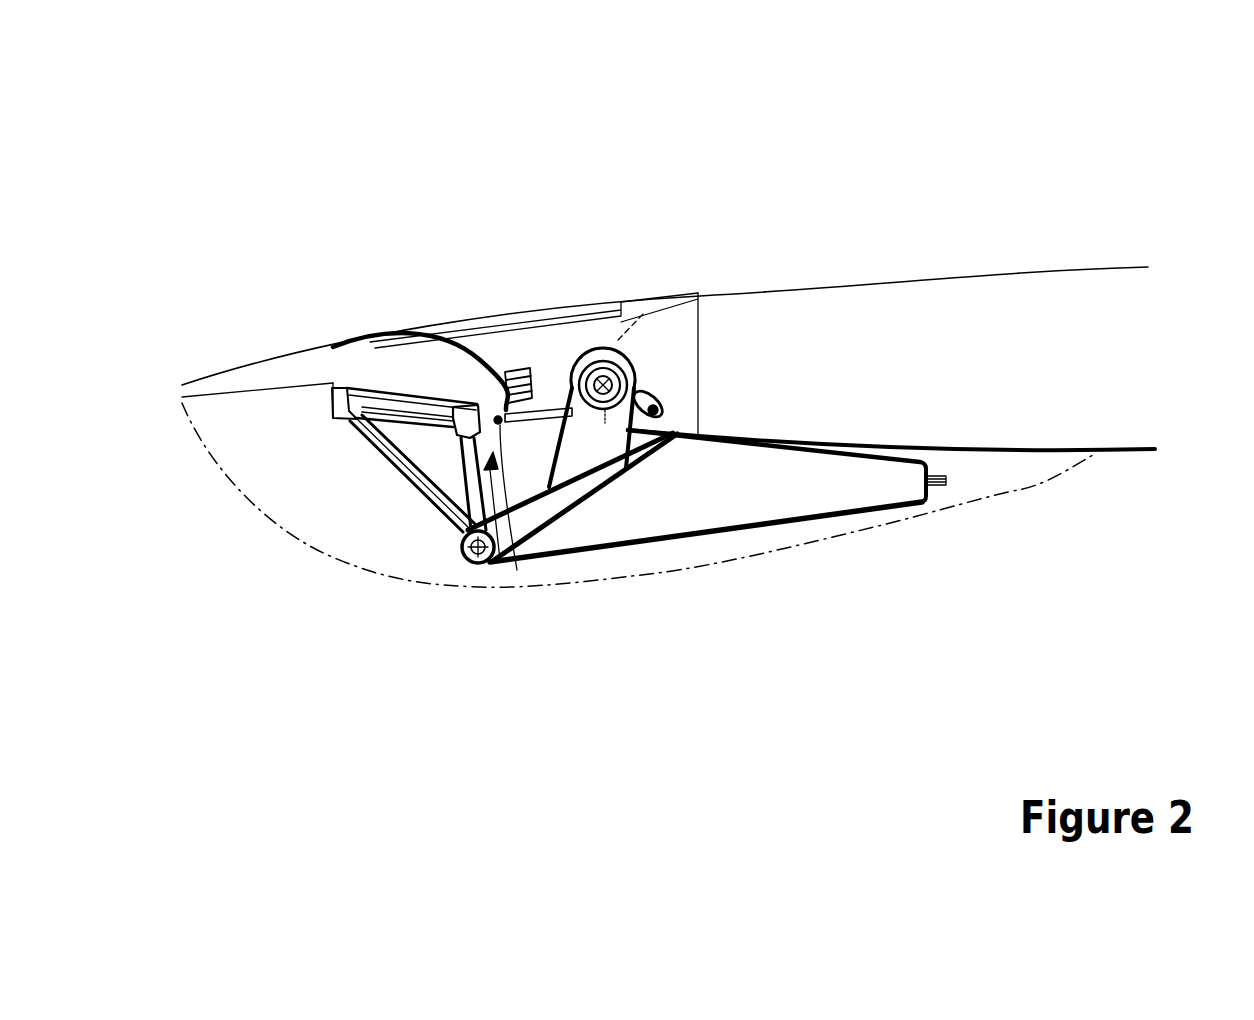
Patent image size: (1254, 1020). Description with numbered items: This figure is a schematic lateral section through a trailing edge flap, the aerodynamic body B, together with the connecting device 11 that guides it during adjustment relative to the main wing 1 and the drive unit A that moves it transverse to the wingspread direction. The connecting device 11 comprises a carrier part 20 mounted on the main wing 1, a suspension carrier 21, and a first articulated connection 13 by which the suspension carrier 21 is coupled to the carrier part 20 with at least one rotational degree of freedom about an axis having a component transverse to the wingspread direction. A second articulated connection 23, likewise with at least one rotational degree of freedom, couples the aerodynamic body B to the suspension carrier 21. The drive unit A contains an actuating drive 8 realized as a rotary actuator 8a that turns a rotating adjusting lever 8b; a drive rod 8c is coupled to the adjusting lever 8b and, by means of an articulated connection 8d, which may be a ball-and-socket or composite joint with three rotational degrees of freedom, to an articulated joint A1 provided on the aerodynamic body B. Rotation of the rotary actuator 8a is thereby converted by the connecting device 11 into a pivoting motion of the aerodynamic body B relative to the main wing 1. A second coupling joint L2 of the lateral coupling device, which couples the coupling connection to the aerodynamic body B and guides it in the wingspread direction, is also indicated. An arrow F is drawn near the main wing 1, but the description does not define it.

The main wing 1 is at (1088, 306).
The actuating drive 8 is at (608, 352).
The rotary actuator 8a is at (630, 357).
The adjusting lever 8b is at (660, 403).
The drive rod 8c is at (500, 420).
The articulated connection 8d is at (517, 570).
The connecting device 11 is at (333, 505).
The first articulated connection 13 is at (331, 416).
The carrier part 20 is at (752, 507).
The suspension carrier 21 is at (405, 495).
The second articulated connection 23 is at (475, 574).
The drive unit A is at (866, 364).
The articulated joint A1 is at (503, 560).
The aerodynamic body B is at (328, 350).
The flight direction F is at (968, 213).
The second coupling joint L2 is at (503, 361).